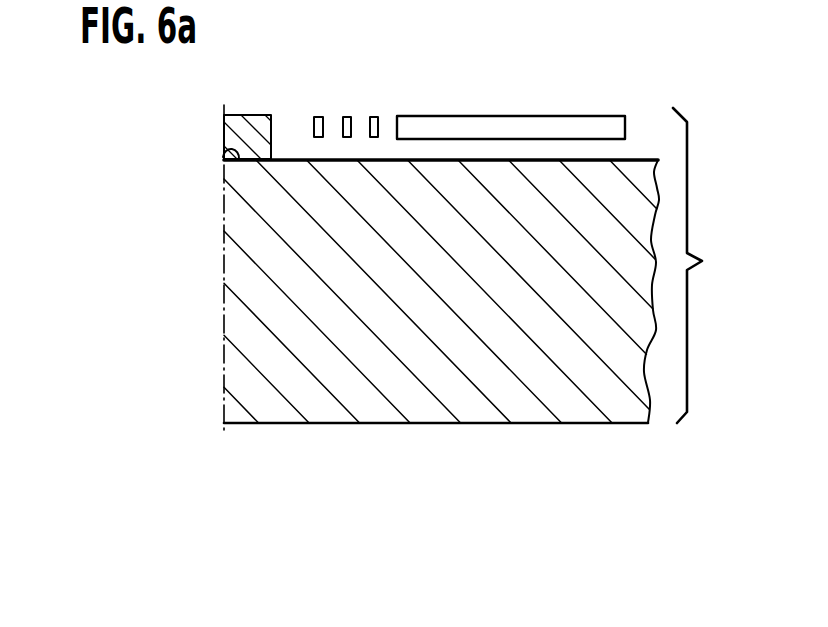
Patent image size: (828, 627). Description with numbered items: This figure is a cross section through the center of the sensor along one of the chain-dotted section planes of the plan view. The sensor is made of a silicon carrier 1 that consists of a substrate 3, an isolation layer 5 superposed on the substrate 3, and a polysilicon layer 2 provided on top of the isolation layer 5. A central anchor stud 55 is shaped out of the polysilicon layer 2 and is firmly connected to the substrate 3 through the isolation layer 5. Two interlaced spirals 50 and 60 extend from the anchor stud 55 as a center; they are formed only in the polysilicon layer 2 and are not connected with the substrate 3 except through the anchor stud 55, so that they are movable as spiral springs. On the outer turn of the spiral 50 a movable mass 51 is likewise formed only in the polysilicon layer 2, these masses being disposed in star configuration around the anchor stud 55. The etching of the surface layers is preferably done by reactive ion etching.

The silicon carrier 1 is at (697, 265).
The polysilicon layer 2 is at (231, 139).
The substrate 3 is at (245, 283).
The isolation layer 5 is at (223, 157).
The spiral 50 is at (347, 116).
The movable mass 51 is at (540, 128).
The anchor stud 55 is at (248, 116).
The spiral 60 is at (317, 116).